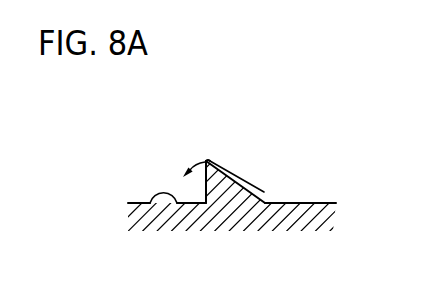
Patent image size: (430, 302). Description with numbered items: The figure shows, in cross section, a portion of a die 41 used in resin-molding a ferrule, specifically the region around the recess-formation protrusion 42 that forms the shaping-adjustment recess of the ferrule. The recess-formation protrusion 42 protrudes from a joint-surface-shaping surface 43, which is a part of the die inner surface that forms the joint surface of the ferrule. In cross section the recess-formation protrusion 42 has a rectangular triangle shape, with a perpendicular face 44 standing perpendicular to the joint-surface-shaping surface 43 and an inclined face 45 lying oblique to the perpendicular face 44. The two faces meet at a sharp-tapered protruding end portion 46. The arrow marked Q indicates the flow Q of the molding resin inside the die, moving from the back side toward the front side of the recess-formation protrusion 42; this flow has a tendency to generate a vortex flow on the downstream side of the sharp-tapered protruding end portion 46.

The die 41 is at (347, 228).
The recess-formation protrusion 42 is at (216, 169).
The joint-surface-shaping surface 43 is at (150, 203).
The perpendicular face 44 is at (205, 191).
The inclined face 45 is at (260, 190).
The sharp-tapered protruding end portion 46 is at (206, 159).
The flow of the molding resin Q is at (205, 161).